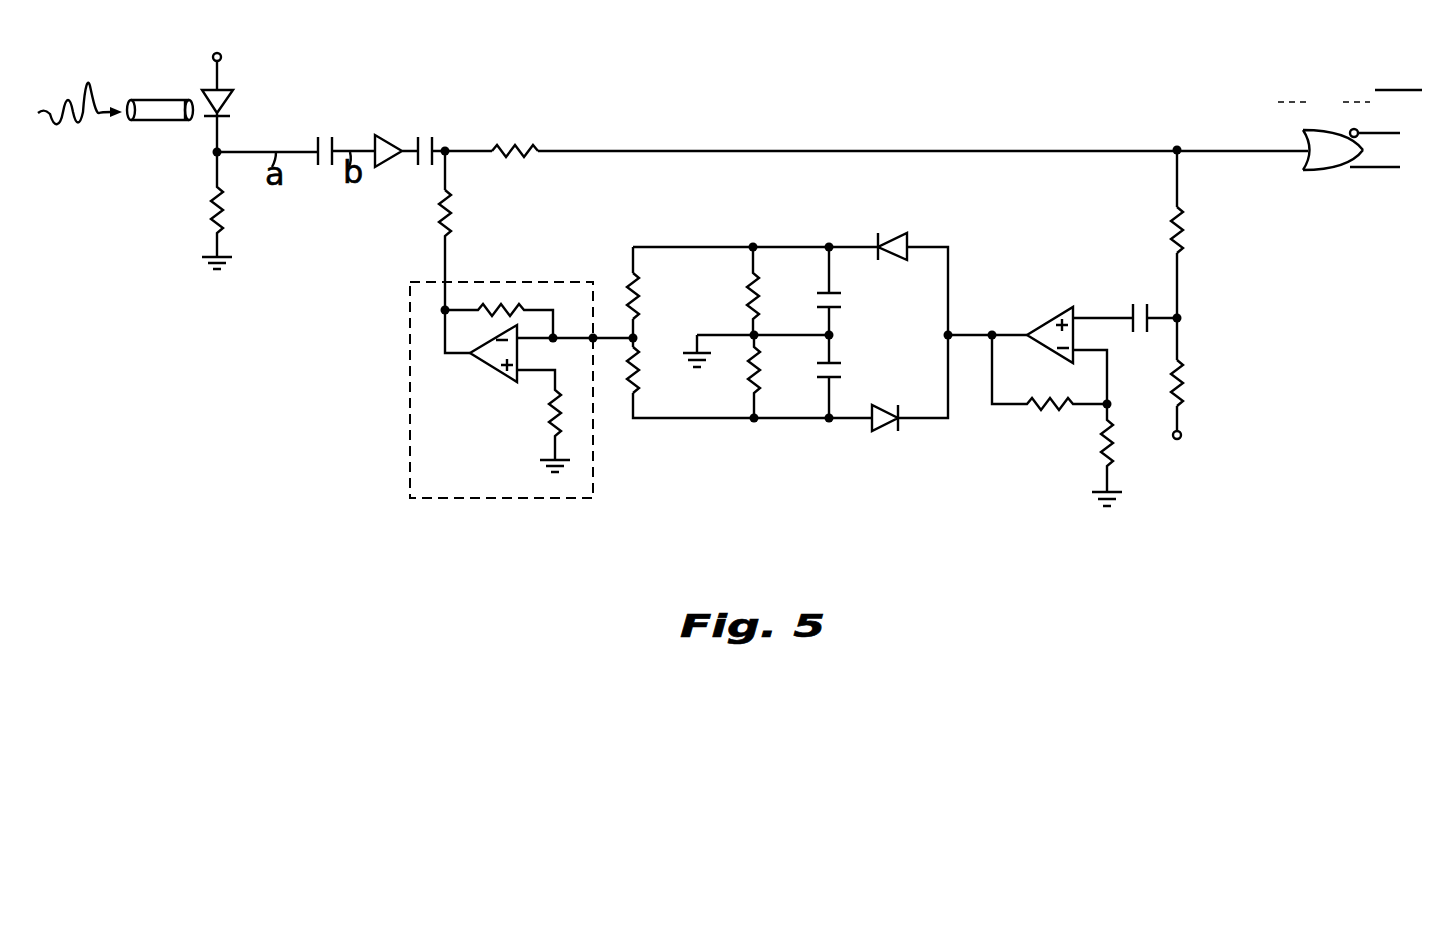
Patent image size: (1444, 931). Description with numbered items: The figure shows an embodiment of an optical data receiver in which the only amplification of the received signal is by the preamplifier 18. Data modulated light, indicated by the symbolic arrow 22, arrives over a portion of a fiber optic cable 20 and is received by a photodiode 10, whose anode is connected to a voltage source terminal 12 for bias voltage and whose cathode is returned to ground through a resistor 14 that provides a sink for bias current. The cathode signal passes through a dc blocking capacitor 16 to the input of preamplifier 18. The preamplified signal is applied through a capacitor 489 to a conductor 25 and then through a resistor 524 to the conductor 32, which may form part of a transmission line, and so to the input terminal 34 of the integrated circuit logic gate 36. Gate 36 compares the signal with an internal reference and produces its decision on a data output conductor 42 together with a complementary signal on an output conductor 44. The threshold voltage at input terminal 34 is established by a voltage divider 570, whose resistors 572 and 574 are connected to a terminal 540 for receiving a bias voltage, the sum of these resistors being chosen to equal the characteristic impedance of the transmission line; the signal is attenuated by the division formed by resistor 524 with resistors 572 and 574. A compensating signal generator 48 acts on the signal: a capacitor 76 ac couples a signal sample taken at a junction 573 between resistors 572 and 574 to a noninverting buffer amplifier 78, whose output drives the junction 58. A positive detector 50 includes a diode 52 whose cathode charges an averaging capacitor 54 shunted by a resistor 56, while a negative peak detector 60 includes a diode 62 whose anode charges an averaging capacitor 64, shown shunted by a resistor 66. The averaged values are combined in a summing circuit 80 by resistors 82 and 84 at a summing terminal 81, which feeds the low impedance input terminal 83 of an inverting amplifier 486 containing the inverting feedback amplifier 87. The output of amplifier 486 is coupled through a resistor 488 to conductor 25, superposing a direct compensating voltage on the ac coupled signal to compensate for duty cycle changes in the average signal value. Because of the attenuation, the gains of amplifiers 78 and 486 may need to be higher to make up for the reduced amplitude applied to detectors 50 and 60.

The symbolic arrow 22 is at (78, 86).
The fiber optic cable 20 is at (166, 120).
The voltage source terminal 12 is at (213, 57).
The photodiode 10 is at (233, 100).
The resistor 14 is at (211, 210).
The dc blocking capacitor 16 is at (320, 137).
The preamplifier 18 is at (385, 135).
The capacitor 489 is at (425, 137).
The resistor 524 is at (514, 145).
The conductor 25 is at (475, 152).
The conductor 32 is at (807, 150).
The resistor 488 is at (438, 213).
The inverting amplifier 486 is at (501, 390).
The first inverting feedback amplifier 87 is at (490, 366).
The low impedance input terminal 83 is at (593, 336).
The summing terminal 81 is at (628, 338).
The compensating signal generator 48 is at (787, 354).
The resistor 82 is at (640, 298).
The further resistor 84 is at (640, 386).
The summing circuit 80 is at (680, 358).
The resistor 56 is at (748, 294).
The resistor 66 is at (748, 385).
The averaging capacitor 54 is at (843, 300).
The averaging capacitor 64 is at (843, 372).
The diode 52 is at (890, 233).
The diode 62 is at (884, 431).
The positive detector 50 is at (823, 218).
The negative peak detector 60 is at (823, 481).
The junction 58 is at (950, 334).
The noninverting buffer amplifier 78 is at (1053, 465).
The capacitor 76 is at (1138, 304).
The voltage divider 570 is at (1243, 312).
The resistor 572 is at (1183, 238).
The node 573 is at (1182, 317).
The resistor 574 is at (1183, 386).
The terminal 540 is at (1182, 437).
The input terminal 34 is at (1349, 150).
The integrated circuit logic gate 36 is at (1330, 131).
The data output conductor 42 is at (1348, 170).
The output conductor 44 is at (1383, 138).